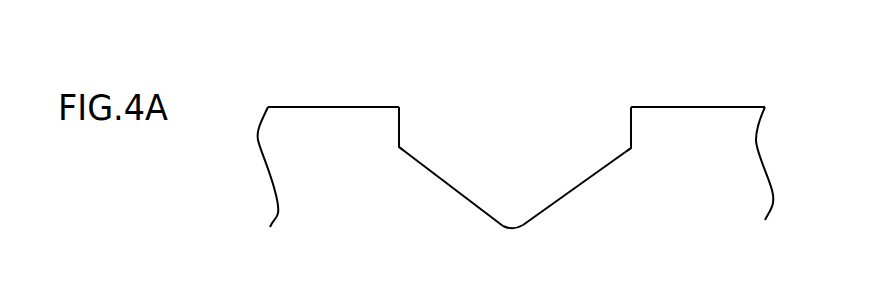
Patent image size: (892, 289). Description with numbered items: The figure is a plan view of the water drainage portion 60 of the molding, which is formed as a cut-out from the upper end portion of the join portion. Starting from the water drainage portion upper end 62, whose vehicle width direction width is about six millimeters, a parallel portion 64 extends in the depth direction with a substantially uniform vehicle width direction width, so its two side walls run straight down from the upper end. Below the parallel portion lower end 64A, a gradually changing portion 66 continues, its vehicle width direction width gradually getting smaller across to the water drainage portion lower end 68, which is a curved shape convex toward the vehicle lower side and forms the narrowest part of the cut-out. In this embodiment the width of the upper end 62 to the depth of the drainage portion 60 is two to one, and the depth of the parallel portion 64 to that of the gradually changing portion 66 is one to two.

The water drainage portion 60 is at (510, 70).
The water drainage portion upper end 62 is at (400, 106).
The parallel portion 64 is at (400, 117).
The parallel portion lower end 64A is at (403, 144).
The gradually changing portion 66 is at (448, 184).
The water drainage portion lower end 68 is at (512, 226).